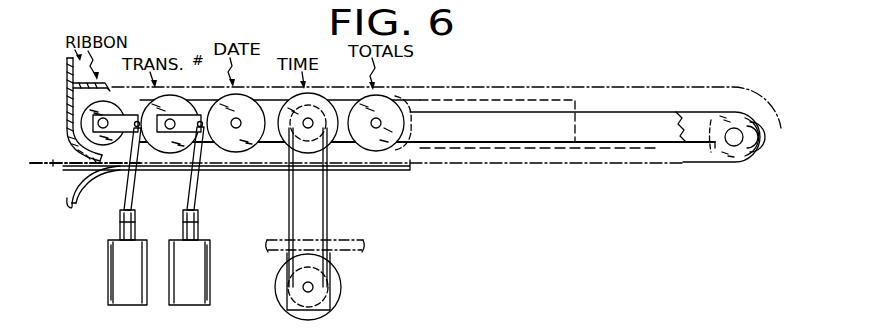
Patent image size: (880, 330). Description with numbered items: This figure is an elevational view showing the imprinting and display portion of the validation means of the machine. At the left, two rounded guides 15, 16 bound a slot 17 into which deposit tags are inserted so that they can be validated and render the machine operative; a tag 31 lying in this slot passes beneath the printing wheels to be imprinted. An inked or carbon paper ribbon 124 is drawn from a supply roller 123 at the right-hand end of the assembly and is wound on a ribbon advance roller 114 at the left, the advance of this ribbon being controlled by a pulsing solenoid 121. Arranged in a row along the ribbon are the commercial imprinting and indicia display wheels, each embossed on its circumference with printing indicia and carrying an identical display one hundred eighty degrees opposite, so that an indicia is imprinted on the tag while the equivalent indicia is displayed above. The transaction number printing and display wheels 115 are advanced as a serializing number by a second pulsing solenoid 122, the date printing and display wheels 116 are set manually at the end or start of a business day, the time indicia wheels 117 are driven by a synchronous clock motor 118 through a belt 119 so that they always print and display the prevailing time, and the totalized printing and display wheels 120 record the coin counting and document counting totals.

The ribbon advance roller 114 is at (93, 110).
The rounded guide 15 is at (67, 122).
The tag 31 is at (46, 162).
The slot 17 is at (74, 175).
The rounded guide 16 is at (67, 200).
The transaction number printing and display wheels 115 is at (172, 96).
The date printing and display wheels 116 is at (236, 95).
The time indicia wheels 117 is at (311, 94).
The totalized printing and display wheels 120 is at (381, 95).
The belt 119 is at (328, 205).
The synchronous clock motor 118 is at (336, 286).
The pulsing solenoid 121 is at (108, 272).
The pulsing solenoid 122 is at (210, 270).
The supply roller 123 is at (756, 156).
The carbon paper or ribbon 124 is at (690, 164).